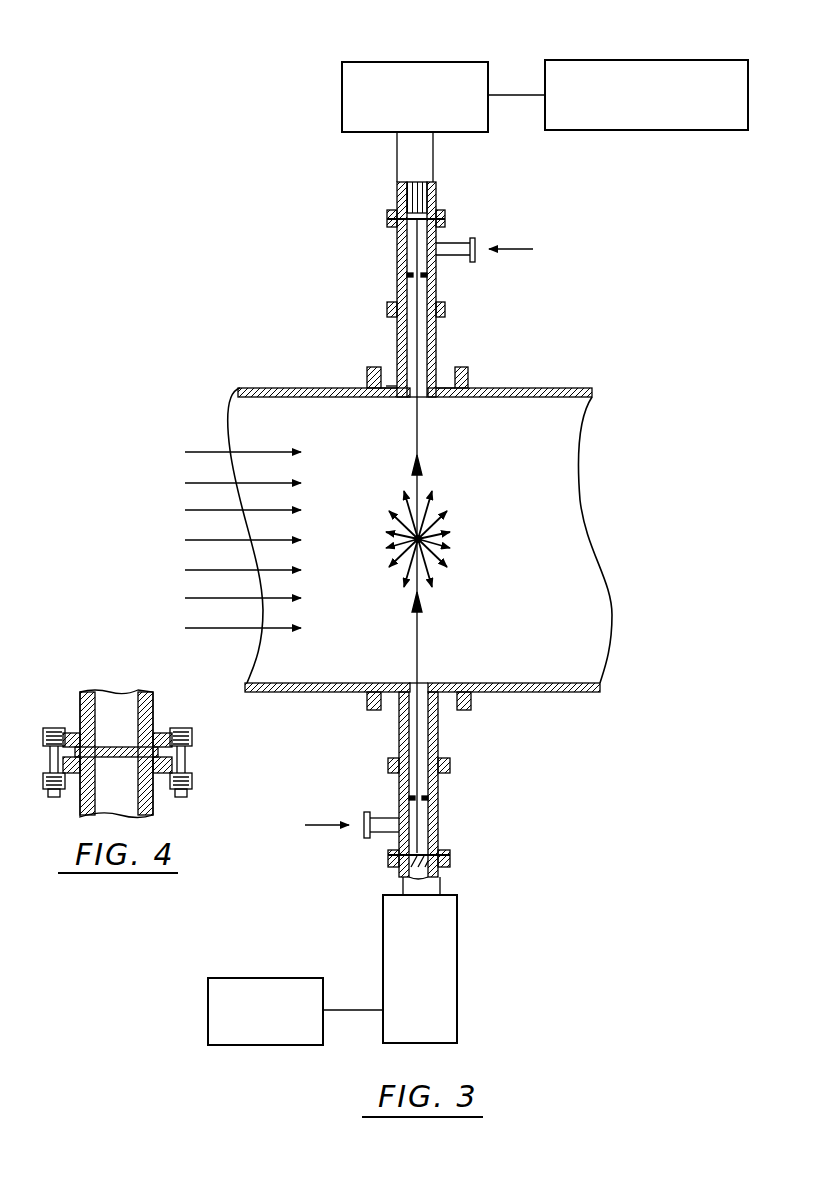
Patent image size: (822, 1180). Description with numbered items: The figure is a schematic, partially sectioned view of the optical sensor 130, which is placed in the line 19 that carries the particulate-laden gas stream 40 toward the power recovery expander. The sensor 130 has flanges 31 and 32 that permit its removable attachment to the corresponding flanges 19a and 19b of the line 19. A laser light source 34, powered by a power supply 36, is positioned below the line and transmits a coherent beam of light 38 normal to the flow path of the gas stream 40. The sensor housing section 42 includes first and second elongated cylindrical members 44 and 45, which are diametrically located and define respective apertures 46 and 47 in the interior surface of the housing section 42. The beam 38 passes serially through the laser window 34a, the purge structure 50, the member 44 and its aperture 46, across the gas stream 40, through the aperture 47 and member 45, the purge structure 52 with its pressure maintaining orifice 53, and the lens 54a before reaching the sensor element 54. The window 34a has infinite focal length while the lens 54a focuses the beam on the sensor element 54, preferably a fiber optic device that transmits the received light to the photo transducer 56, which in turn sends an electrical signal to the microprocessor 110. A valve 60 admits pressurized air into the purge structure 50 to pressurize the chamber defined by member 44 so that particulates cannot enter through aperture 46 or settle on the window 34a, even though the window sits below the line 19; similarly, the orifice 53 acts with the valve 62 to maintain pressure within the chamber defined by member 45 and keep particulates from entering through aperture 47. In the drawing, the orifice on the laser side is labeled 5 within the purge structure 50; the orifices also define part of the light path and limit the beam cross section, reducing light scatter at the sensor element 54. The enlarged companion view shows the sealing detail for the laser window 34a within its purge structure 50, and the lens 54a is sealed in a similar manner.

In FIG. 3, the photo transducer 56 is at (457, 60).
In FIG. 3, the microprocessor 110 is at (655, 58).
In FIG. 3, the sensor element 54 is at (400, 192).
In FIG. 3, the lens 54a is at (415, 213).
In FIG. 3, the purge structure 52 is at (399, 255).
In FIG. 3, the valve 62 is at (452, 242).
In FIG. 3, the pressure maintaining orifice 53 is at (430, 278).
In FIG. 3, the second elongated cylindrical member 45 is at (398, 340).
In FIG. 3, the sensor housing section 42 is at (390, 378).
In FIG. 3, the flange 31 is at (382, 383).
In FIG. 3, the flange of line 19a is at (366, 380).
In FIG. 3, the flange of line 19b is at (470, 378).
In FIG. 3, the flange 32 is at (452, 368).
In FIG. 3, the line 19 is at (557, 388).
In FIG. 3, the gas stream 40 is at (212, 465).
In FIG. 3, the aperture 47 is at (412, 397).
In FIG. 3, the beam of light 38 is at (421, 647).
In FIG. 3, the aperture 46 is at (415, 683).
In FIG. 3, the first elongated cylindrical member 44 is at (400, 733).
In FIG. 3, the baffle 5 is at (436, 800).
In FIG. 3, the valve 60 is at (380, 836).
In FIG. 3, the purge structure 50 is at (440, 823).
In FIG. 4, the purge structure 50 is at (155, 712).
In FIG. 3, the laser window 34a is at (438, 868).
In FIG. 4, the laser window 34a is at (126, 747).
In FIG. 3, the laser light source 34 is at (458, 975).
In FIG. 3, the power supply 36 is at (262, 978).
In FIG. 3, the optical sensor 130 is at (228, 218).